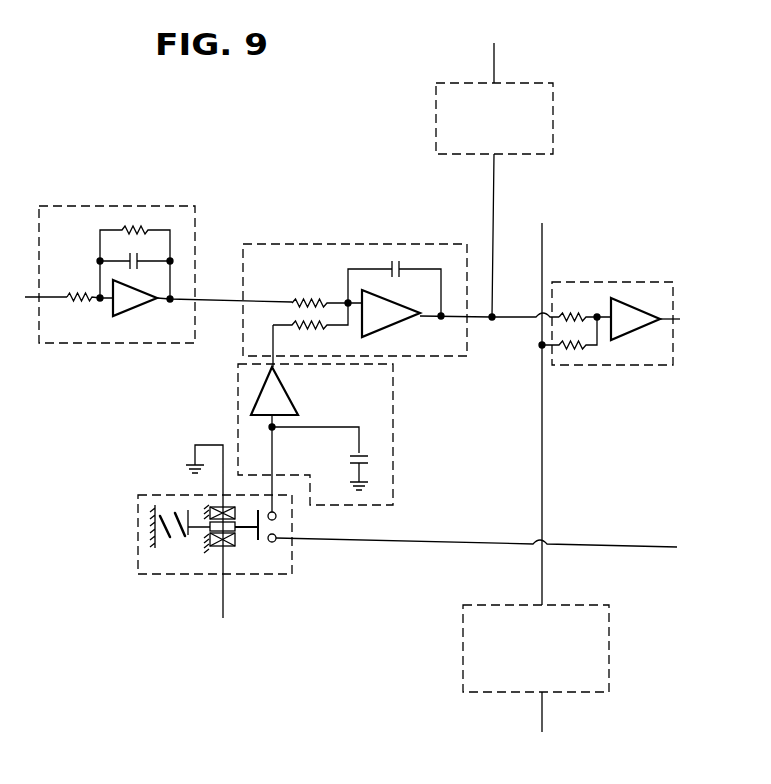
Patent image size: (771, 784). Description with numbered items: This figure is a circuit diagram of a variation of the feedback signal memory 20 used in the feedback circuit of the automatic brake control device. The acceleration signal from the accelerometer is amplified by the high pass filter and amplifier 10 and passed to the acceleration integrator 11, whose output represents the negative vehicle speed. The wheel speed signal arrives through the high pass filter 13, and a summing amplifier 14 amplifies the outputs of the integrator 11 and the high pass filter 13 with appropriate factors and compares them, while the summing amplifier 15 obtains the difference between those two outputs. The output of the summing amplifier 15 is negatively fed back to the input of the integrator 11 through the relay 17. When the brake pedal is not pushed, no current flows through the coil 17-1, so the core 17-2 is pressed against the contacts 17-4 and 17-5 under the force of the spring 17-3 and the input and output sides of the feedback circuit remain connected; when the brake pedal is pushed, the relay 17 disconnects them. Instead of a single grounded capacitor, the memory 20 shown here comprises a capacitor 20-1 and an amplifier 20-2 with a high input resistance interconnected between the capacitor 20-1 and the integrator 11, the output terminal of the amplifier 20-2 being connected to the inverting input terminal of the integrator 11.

The high pass filter and amplifier 10 is at (170, 206).
The acceleration integrator 11 is at (296, 244).
The high pass filter 13 is at (463, 642).
The summing amplifier 14 is at (436, 118).
The summing amplifier 15 is at (597, 282).
The relay 17 is at (372, 531).
The coil 17-1 is at (223, 560).
The core 17-2 is at (237, 530).
The spring 17-3 is at (176, 545).
The contact 17-4 is at (276, 540).
The contact 17-5 is at (276, 517).
The feedback signal memory 20 is at (360, 438).
The capacitor 20-1 is at (350, 458).
The amplifier 20-2 is at (288, 400).